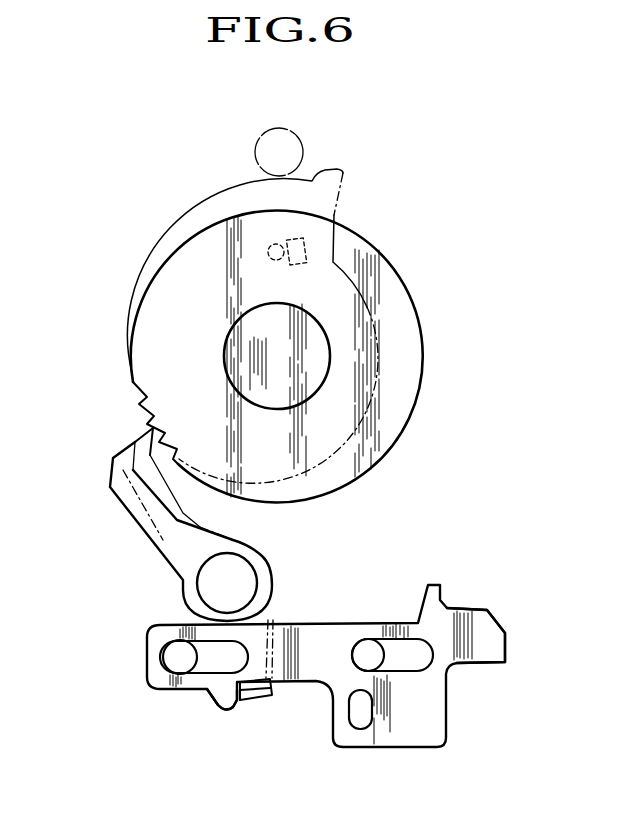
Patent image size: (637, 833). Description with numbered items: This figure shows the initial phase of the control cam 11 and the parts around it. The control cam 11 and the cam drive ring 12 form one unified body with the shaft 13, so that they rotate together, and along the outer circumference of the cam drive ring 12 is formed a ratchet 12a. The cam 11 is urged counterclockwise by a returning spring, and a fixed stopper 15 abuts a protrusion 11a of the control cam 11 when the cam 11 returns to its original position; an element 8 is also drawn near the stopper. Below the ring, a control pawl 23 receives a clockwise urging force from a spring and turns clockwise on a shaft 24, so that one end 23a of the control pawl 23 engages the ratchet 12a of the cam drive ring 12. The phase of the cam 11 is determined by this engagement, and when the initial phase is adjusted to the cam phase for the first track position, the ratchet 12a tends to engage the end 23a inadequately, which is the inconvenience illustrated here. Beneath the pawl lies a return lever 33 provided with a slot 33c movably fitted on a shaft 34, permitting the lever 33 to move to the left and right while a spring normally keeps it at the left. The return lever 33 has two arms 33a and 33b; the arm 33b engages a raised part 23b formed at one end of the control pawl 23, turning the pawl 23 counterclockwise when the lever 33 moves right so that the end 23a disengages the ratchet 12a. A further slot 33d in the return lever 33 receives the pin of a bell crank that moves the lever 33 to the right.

The roller 8 is at (257, 144).
The fixed stopper 15 is at (268, 245).
The control cam 11 is at (182, 230).
The protrusion 11a is at (305, 252).
The shaft 13 is at (226, 336).
The cam drive ring 12 is at (413, 367).
The ratchet 12a is at (143, 413).
The control pawl 23 is at (137, 517).
The one end of the control pawl 23a is at (115, 473).
The raised part 23b is at (260, 698).
The shaft 24 is at (197, 594).
The return lever 33 is at (412, 733).
The arm 33a is at (487, 660).
The arm 33b is at (227, 713).
The slot 33c is at (410, 642).
The slot 33d is at (360, 730).
The shaft 34 is at (186, 665).